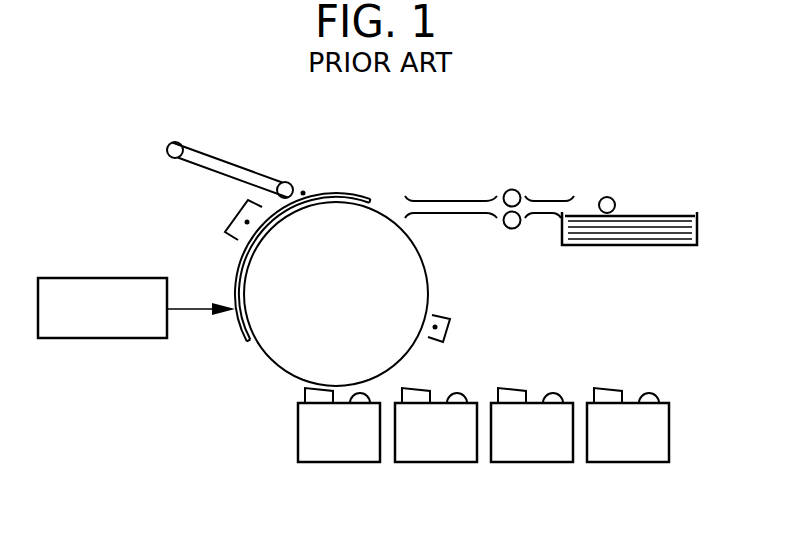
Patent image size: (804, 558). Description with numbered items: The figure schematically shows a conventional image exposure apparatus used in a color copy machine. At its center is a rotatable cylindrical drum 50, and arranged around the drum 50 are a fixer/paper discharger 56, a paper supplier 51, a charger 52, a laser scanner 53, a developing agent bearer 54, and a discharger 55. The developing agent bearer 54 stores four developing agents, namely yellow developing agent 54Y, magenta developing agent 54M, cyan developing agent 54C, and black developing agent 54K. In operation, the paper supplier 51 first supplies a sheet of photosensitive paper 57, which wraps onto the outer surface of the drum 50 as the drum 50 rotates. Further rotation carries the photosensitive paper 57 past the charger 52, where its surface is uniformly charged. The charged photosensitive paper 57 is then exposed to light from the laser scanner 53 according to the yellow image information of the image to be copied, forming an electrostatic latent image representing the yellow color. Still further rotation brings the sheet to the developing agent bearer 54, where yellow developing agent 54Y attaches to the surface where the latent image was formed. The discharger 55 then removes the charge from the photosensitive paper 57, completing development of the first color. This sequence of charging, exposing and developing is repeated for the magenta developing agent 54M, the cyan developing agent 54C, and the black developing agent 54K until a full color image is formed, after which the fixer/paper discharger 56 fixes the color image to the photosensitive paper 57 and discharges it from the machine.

The drum 50 is at (278, 368).
The paper supplier 51 is at (697, 184).
The charger 52 is at (247, 222).
The laser scanner 53 is at (108, 278).
The developing agent bearer 54 is at (482, 456).
The yellow developing agent 54Y is at (339, 425).
The magenta developing agent 54M is at (436, 425).
The cyan developing agent 54C is at (532, 425).
The black developing agent 54K is at (628, 425).
The discharger 55 is at (435, 327).
The fixer/paper discharger 56 is at (323, 135).
The photosensitive paper 57 is at (240, 327).